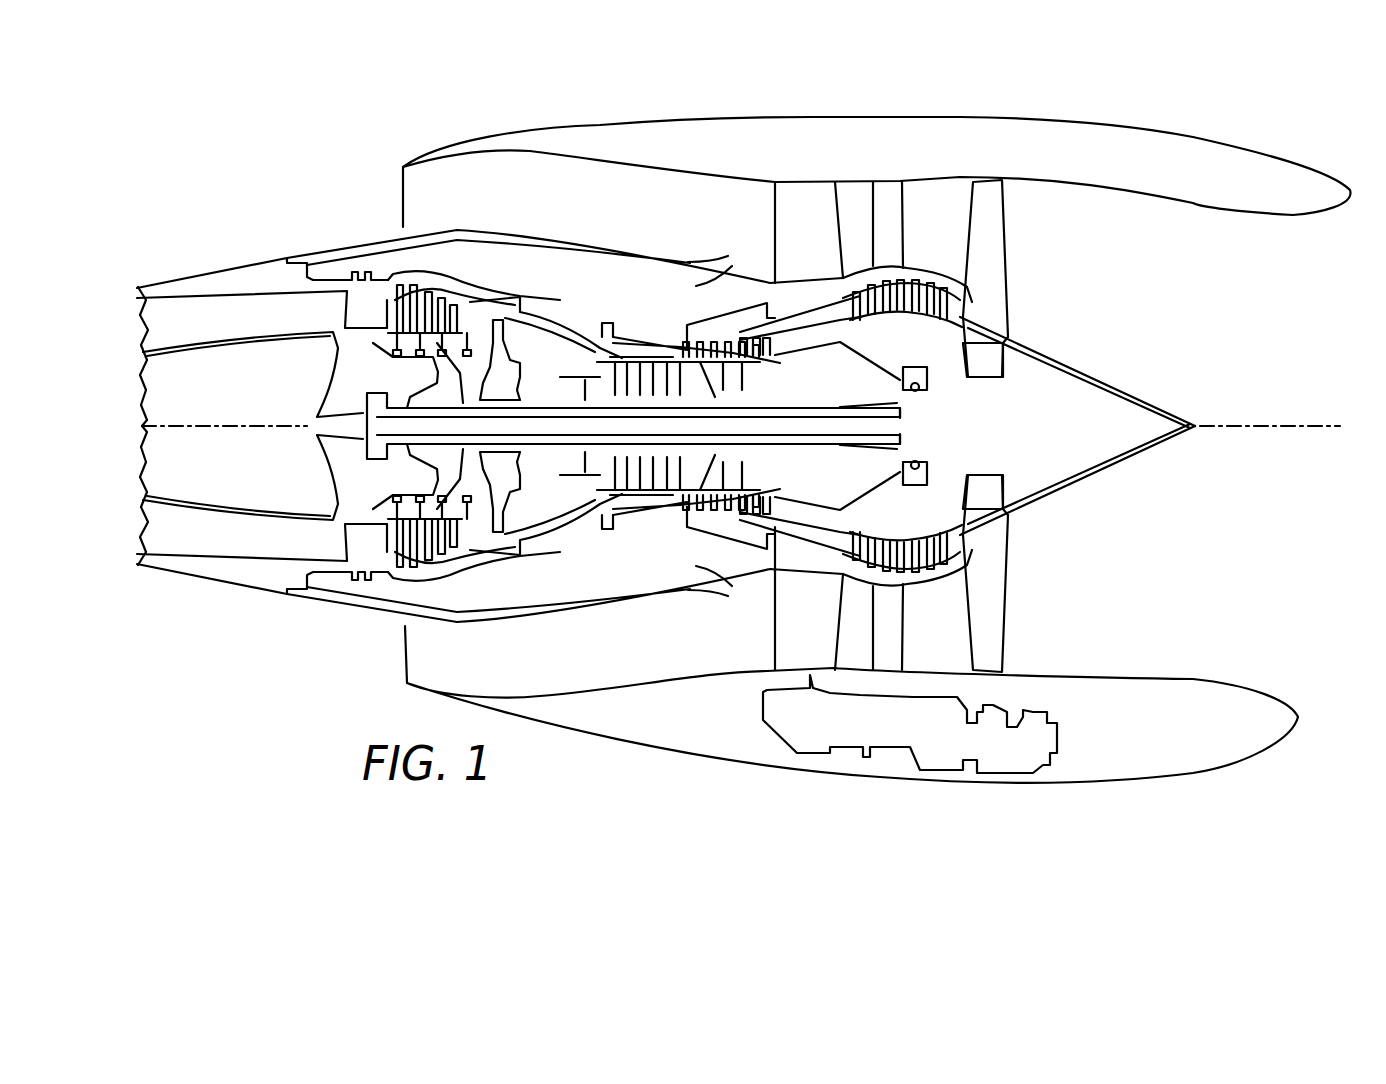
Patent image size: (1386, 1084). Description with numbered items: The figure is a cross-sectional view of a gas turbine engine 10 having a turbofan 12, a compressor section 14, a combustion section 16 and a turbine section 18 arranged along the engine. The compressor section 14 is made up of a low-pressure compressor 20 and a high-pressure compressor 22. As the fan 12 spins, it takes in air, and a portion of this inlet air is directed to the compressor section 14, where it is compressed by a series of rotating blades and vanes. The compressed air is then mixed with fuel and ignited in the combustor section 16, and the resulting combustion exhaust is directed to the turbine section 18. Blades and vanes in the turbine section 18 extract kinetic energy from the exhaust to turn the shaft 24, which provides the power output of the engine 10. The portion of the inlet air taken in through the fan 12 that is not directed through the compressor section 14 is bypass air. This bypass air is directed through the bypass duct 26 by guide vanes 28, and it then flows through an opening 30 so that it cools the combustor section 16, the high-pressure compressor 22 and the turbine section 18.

The gas turbine engine 10 is at (262, 210).
The turbofan 12 is at (1005, 197).
The compressor section 14 is at (788, 302).
The combustion section 16 is at (573, 310).
The turbine section 18 is at (438, 260).
The low-pressure compressor 20 is at (930, 590).
The high-pressure compressor 22 is at (666, 515).
The shaft 24 is at (317, 413).
The bypass duct 26 is at (857, 205).
The guide vanes 28 is at (888, 195).
The opening 30 is at (743, 260).